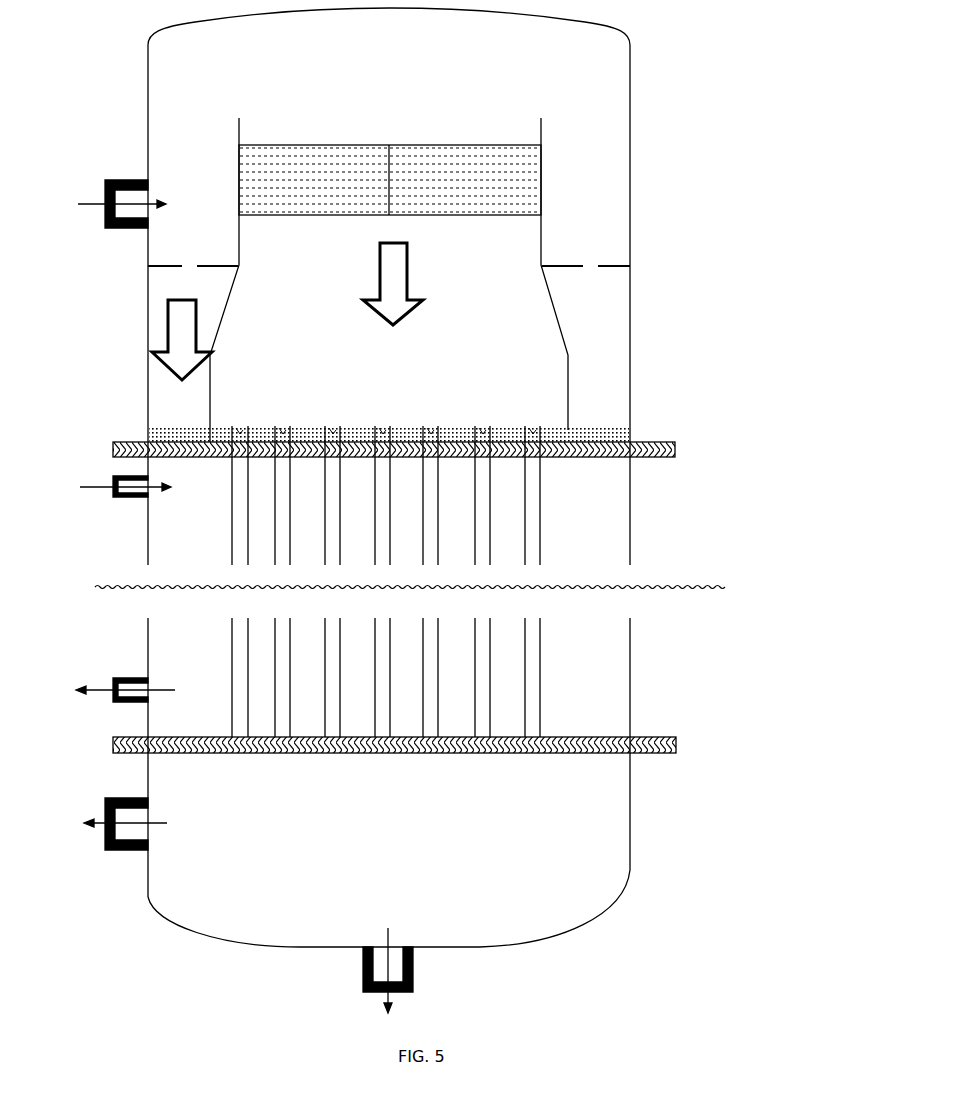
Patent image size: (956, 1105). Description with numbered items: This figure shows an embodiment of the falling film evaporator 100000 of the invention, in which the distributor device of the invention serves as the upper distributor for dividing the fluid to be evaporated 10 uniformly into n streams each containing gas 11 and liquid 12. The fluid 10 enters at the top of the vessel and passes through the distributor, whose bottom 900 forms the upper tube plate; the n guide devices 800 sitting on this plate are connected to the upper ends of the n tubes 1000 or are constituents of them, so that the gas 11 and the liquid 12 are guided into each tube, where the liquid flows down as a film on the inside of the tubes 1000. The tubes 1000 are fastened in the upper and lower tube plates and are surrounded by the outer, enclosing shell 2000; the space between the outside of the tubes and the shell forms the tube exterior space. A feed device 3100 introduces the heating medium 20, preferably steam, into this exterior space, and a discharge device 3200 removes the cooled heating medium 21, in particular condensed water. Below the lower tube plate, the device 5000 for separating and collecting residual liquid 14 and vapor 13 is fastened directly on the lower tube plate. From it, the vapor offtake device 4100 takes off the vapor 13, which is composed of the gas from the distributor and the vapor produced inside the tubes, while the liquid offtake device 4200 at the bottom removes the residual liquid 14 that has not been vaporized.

The fluid to be evaporated 10 is at (103, 205).
The gas 11 is at (393, 284).
The liquid 12 is at (617, 437).
The vapor 13 is at (100, 800).
The residual liquid 14 is at (373, 997).
The heating medium 20 is at (93, 487).
The cooled heating medium 21 is at (108, 688).
The guide devices 800 is at (530, 438).
The bottom of the distributor device 900 is at (656, 441).
The tubes 1000 is at (535, 530).
The outer, enclosing shell 2000 is at (632, 660).
The feed device 3100 is at (112, 476).
The discharge device 3200 is at (135, 675).
The vapor offtake device 4100 is at (120, 850).
The liquid offtake device 4200 is at (365, 968).
The device for separating and collecting residual liquid and vapor 5000 is at (580, 785).
The falling film evaporator 100000 is at (700, 468).